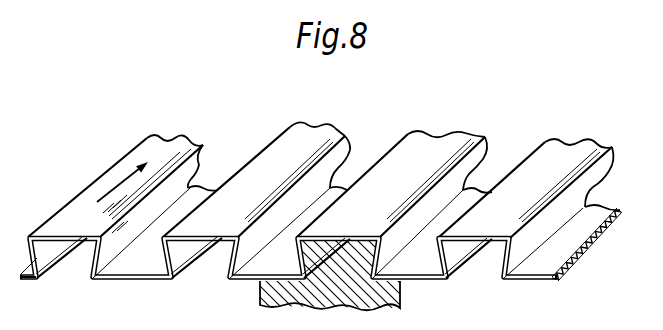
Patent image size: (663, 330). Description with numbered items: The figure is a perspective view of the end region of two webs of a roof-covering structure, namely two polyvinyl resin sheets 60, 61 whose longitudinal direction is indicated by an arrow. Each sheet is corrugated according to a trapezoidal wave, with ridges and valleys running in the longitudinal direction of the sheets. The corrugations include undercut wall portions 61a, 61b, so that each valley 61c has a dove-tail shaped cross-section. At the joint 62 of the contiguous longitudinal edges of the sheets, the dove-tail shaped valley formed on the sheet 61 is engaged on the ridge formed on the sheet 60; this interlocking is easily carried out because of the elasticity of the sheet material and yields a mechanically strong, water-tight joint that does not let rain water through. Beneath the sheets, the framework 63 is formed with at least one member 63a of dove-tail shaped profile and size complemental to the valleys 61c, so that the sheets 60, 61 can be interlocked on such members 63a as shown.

The polyvinyl resin sheet 60 is at (28, 280).
The polyvinyl resin sheet 61 is at (578, 258).
The undercut wall portion 61a is at (440, 257).
The undercut wall portion 61b is at (520, 253).
The valley 61c is at (487, 253).
The joint 62 is at (497, 124).
The framework 63 is at (383, 300).
The member 63a is at (349, 255).